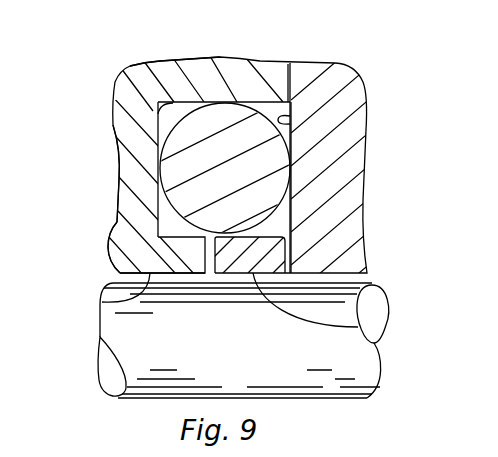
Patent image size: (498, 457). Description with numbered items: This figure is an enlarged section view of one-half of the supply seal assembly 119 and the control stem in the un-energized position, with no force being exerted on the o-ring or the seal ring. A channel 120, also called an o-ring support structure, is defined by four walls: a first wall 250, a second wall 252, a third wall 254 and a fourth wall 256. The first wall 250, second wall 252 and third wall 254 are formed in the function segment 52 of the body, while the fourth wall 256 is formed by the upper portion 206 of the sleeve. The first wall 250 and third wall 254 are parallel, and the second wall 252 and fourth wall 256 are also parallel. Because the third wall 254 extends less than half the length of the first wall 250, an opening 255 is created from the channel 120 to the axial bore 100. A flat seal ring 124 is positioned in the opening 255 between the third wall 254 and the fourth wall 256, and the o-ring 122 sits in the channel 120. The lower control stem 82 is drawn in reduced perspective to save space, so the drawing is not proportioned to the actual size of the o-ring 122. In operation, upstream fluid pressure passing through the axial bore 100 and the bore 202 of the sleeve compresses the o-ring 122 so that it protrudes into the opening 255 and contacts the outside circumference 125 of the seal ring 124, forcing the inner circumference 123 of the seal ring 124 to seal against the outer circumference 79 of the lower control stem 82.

The supply seal assembly 119 is at (180, 87).
The first wall 250 is at (245, 98).
The channel 120 is at (118, 110).
The second wall 252 is at (155, 134).
The o-ring 122 is at (207, 183).
The third wall 254 is at (118, 225).
The function segment 52 is at (130, 246).
The axial bore 100 is at (101, 302).
The lower control stem 82 is at (98, 370).
The upper portion 206 is at (372, 89).
The fourth wall 256 is at (292, 133).
The outside circumference 125 is at (293, 213).
The opening 255 is at (293, 246).
The flat seal ring 124 is at (258, 263).
The bore 202 is at (348, 277).
The inner circumference 123 is at (388, 326).
The outer circumference 79 is at (308, 347).